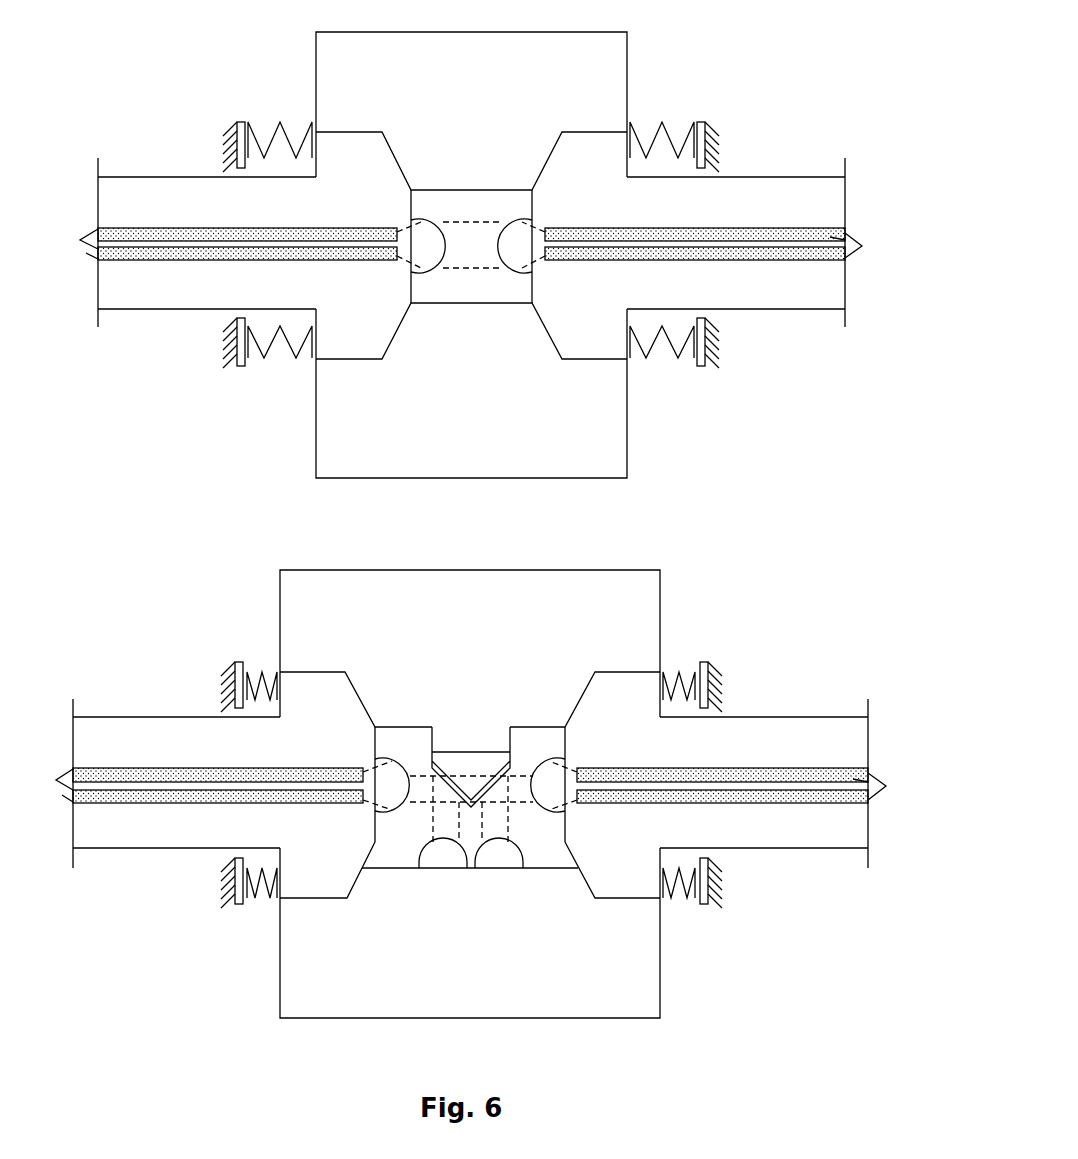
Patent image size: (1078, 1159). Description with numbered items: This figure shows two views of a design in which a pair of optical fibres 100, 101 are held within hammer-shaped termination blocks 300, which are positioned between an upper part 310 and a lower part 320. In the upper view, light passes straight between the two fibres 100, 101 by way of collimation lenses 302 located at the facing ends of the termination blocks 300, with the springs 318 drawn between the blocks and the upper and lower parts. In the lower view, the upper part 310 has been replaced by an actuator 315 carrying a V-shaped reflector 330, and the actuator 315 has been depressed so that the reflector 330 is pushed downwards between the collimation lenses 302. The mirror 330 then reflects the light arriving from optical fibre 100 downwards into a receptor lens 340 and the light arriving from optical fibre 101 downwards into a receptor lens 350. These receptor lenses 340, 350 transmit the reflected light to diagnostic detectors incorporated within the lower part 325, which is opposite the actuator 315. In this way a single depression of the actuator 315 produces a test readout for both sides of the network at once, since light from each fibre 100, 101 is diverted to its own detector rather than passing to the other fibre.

The optical fibre 100 is at (187, 230).
The optical fibre 101 is at (793, 230).
The termination block 300 is at (160, 297).
The collimation lens 302 is at (432, 240).
The upper part 310 is at (618, 46).
The actuator 315 is at (647, 582).
The spring 318 is at (282, 132).
The lower part 320 is at (615, 453).
The lower part 325 is at (290, 983).
The V-shaped reflector 330 is at (457, 778).
The receptor lens 340 is at (432, 860).
The receptor lens 350 is at (513, 860).